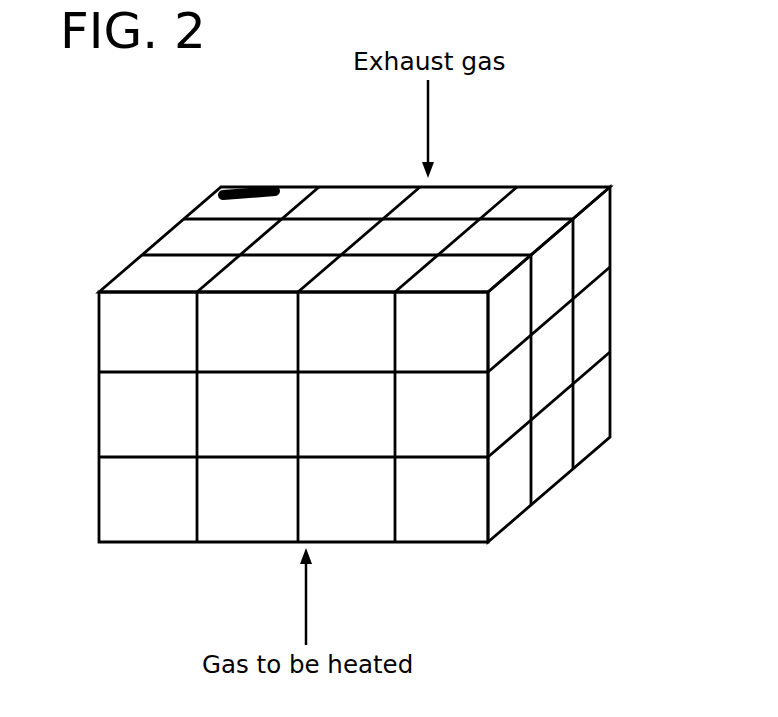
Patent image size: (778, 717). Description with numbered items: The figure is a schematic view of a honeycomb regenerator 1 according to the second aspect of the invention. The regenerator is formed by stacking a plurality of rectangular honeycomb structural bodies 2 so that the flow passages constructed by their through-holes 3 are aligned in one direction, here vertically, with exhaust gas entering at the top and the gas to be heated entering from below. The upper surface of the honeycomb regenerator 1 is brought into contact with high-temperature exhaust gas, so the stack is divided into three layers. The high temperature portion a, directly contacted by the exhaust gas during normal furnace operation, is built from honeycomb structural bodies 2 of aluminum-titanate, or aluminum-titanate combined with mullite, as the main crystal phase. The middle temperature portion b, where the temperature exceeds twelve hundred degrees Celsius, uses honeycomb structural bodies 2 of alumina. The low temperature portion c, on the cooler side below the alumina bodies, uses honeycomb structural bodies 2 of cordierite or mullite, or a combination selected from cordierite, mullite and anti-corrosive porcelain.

The honeycomb regenerator 1 is at (650, 291).
The honeycomb structural bodies 2 is at (106, 333).
The through-holes 3 is at (300, 242).
The high temperature portion a is at (620, 182).
The middle temperature portion b is at (620, 270).
The low temperature portion c is at (620, 357).